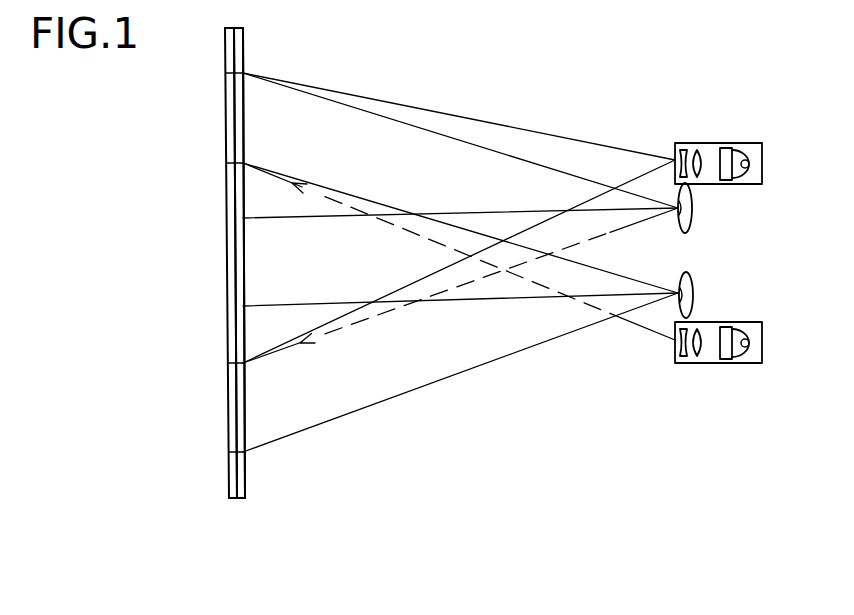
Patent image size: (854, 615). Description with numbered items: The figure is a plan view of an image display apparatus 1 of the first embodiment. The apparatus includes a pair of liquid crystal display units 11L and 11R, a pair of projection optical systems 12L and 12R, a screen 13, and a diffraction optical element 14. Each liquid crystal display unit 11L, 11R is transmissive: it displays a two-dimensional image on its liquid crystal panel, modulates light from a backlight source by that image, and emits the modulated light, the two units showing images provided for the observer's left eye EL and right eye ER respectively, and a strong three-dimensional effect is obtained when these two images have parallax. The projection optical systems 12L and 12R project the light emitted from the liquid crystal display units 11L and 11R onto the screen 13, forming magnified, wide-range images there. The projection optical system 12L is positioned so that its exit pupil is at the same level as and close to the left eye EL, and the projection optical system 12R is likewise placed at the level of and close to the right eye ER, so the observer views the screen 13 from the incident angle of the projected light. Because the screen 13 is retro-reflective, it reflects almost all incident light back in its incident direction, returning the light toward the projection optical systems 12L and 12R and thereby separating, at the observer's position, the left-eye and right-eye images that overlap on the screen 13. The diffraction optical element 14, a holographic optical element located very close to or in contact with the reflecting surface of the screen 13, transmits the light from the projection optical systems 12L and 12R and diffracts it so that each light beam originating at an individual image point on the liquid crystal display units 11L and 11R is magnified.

The image display apparatus 1 is at (503, 482).
The screen 13 is at (225, 197).
The diffraction optical element 14 is at (245, 117).
The liquid crystal display unit 11R is at (729, 143).
The liquid crystal display unit 11L is at (736, 364).
The projection optical system 12R is at (694, 143).
The projection optical system 12L is at (690, 364).
The right eye ER is at (694, 212).
The left eye EL is at (695, 292).